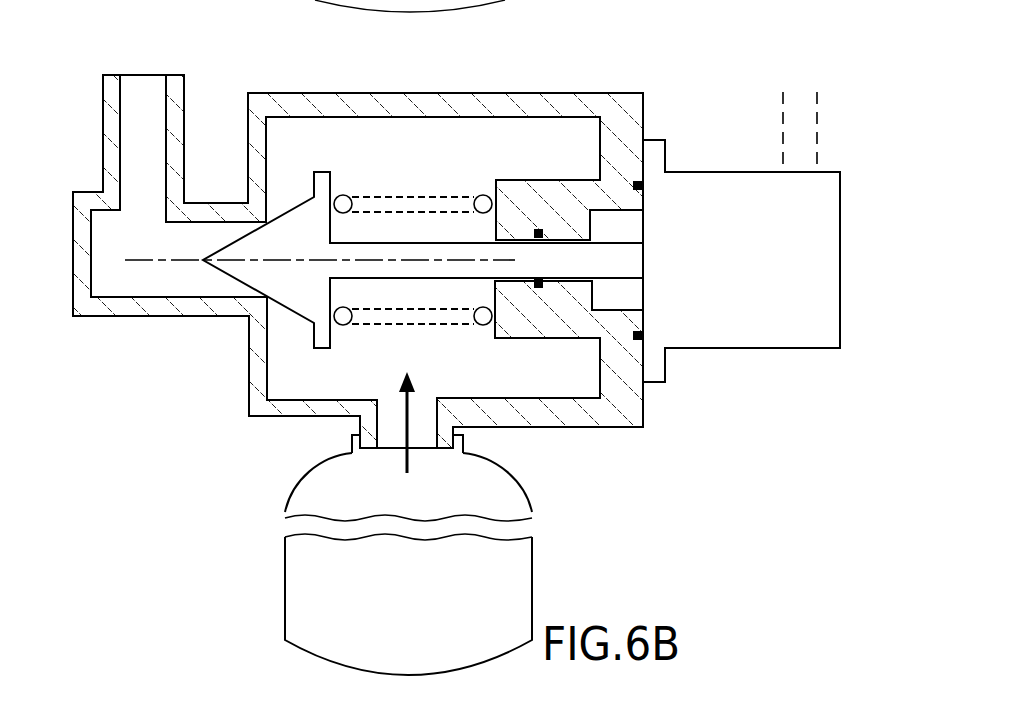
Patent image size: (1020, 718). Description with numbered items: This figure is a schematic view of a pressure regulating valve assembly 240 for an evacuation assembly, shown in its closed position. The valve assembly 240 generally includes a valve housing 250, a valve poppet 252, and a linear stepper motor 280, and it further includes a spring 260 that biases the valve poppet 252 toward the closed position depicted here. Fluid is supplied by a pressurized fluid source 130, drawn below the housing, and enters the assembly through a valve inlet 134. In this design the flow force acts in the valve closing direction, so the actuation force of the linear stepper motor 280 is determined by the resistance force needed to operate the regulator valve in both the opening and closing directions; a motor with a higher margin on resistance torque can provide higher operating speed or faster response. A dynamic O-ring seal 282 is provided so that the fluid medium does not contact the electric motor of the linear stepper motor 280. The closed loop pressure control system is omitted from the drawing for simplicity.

The valve assembly 240 is at (106, 46).
The valve housing 250 is at (507, 93).
The valve poppet 252 is at (324, 166).
The spring 260 is at (462, 327).
The dynamic O-ring seal 282 is at (538, 231).
The linear stepper motor 280 is at (705, 172).
The valve inlet 134 is at (417, 453).
The pressurized fluid source 130 is at (424, 605).